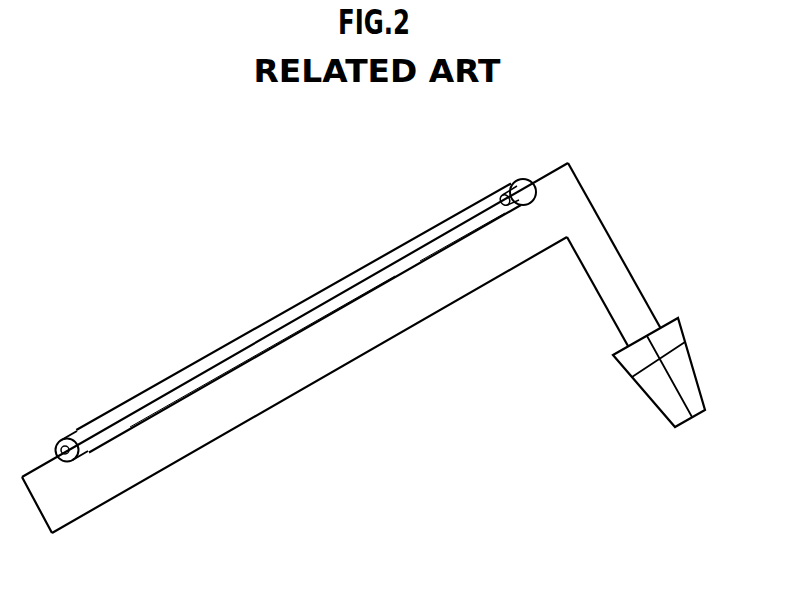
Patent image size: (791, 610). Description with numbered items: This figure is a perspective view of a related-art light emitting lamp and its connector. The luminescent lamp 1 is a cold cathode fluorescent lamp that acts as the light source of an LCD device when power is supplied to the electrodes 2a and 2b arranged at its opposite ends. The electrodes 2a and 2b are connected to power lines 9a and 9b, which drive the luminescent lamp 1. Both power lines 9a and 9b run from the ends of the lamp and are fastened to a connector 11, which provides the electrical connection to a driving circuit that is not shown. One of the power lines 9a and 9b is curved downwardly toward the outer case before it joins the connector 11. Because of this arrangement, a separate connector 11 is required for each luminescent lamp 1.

The luminescent lamp 1 is at (305, 303).
The electrode 2a is at (507, 190).
The electrode 2b is at (75, 432).
The power line 9a is at (607, 218).
The power line 9b is at (593, 285).
The connector 11 is at (650, 388).